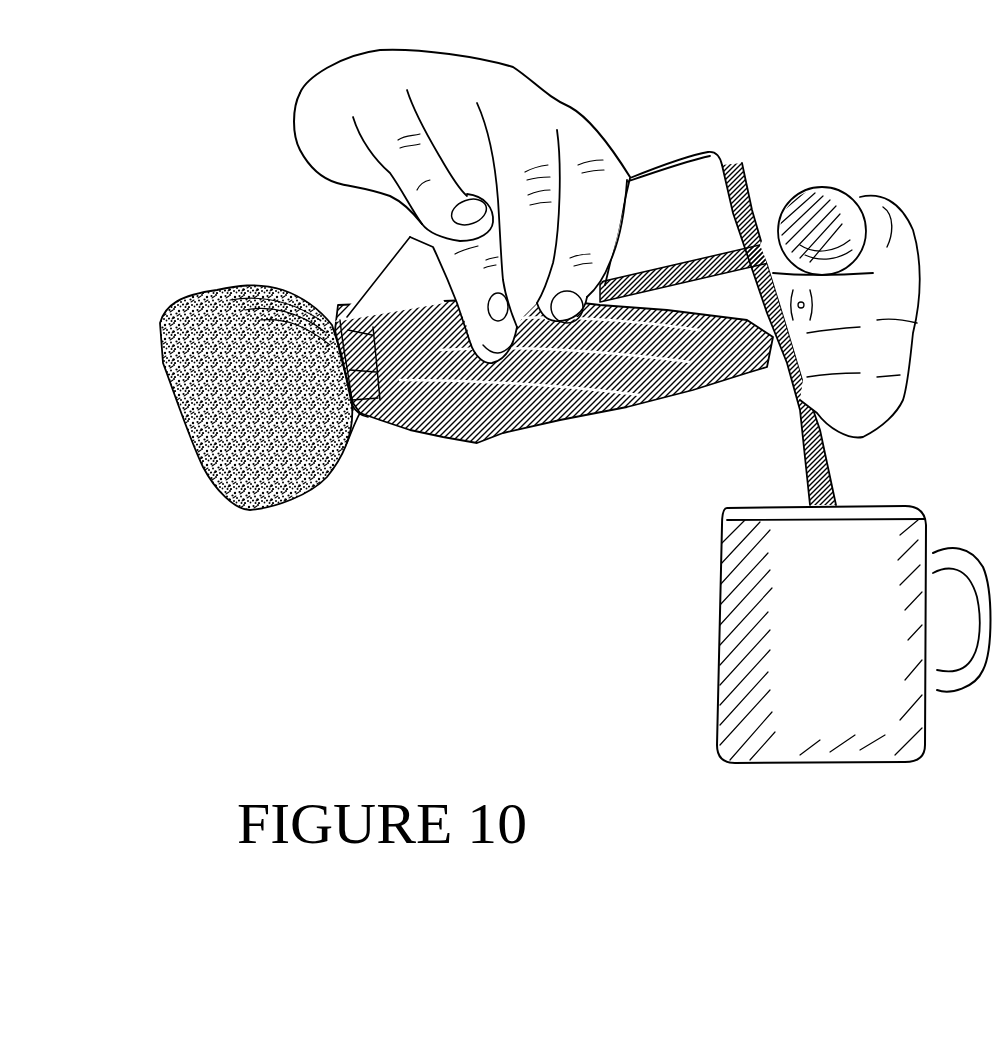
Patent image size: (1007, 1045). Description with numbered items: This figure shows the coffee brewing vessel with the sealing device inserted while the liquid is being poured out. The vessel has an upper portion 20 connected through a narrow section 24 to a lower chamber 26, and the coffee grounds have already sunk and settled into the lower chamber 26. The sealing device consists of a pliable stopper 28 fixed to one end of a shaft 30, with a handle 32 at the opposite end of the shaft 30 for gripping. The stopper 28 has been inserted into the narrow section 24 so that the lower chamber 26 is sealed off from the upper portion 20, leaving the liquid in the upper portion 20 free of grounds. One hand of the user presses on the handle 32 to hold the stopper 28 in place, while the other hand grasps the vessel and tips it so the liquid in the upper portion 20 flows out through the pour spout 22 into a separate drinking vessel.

The upper portion 20 is at (560, 423).
The pour spout 22 is at (757, 383).
The narrow section 24 is at (334, 330).
The lower chamber 26 is at (178, 436).
The stopper 28 is at (365, 425).
The shaft 30 is at (680, 268).
The handle 32 is at (807, 190).